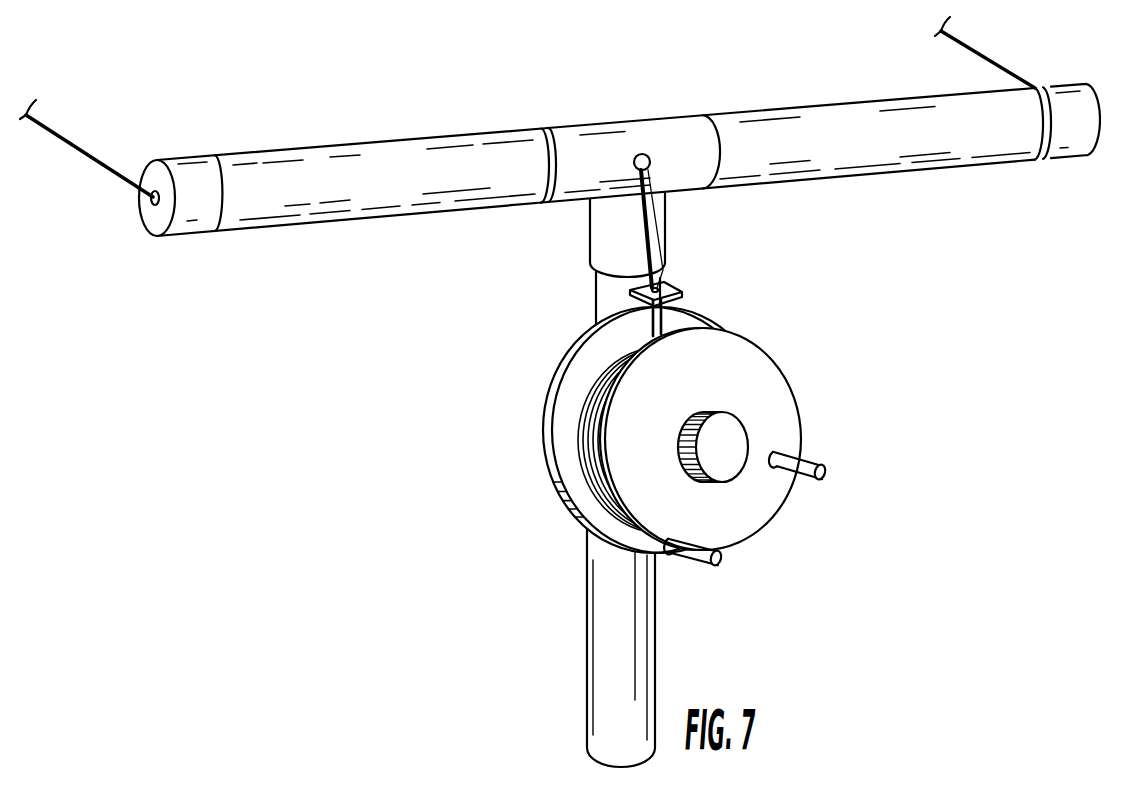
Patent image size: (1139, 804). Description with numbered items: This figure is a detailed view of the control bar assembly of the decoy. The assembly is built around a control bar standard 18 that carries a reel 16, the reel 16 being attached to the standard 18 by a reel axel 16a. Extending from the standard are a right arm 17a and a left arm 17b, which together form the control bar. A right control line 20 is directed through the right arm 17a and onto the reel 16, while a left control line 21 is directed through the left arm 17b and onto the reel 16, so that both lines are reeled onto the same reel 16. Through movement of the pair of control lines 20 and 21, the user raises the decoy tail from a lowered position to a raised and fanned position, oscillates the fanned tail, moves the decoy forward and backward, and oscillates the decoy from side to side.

The reel 16 is at (765, 380).
The reel axel 16a is at (740, 450).
The right arm 17a is at (830, 120).
The left arm 17b is at (357, 160).
The control bar standard 18 is at (623, 618).
The right control line 20 is at (986, 53).
The left control line 21 is at (72, 138).